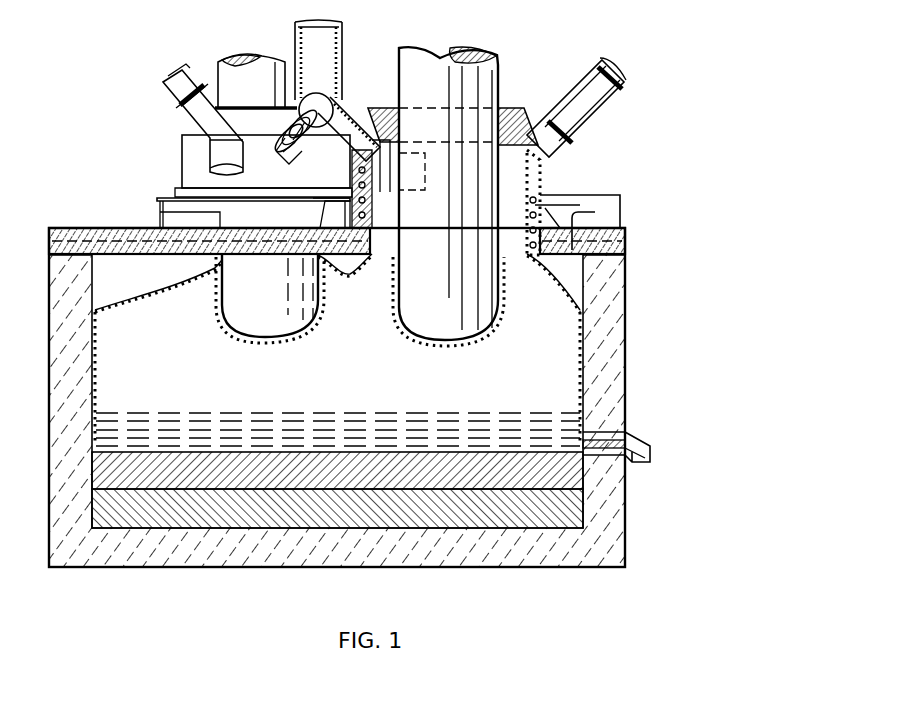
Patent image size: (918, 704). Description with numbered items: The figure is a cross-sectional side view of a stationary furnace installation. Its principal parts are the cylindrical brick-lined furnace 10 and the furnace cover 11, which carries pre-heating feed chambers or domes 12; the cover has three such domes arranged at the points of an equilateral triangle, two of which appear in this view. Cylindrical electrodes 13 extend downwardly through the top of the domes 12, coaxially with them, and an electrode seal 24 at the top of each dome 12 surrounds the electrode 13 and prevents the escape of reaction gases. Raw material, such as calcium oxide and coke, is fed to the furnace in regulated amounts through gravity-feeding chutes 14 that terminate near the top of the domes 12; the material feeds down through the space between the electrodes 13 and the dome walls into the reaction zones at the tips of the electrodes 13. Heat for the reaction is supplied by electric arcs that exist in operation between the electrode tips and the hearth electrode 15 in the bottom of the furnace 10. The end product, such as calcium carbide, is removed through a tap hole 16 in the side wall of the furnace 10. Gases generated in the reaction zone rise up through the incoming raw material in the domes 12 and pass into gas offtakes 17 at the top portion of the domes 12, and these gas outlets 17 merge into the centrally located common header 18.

The furnace 10 is at (41, 296).
The furnace cover 11 is at (98, 219).
The pre-heating feed chamber (dome) 12 is at (173, 155).
The electrode 13 is at (493, 82).
The gravity-feeding chute 14 is at (167, 88).
The hearth electrode 15 is at (380, 530).
The tap hole 16 is at (626, 441).
The gas offtake 17 is at (293, 150).
The common header 18 is at (342, 54).
The electrode seal 24 is at (512, 110).